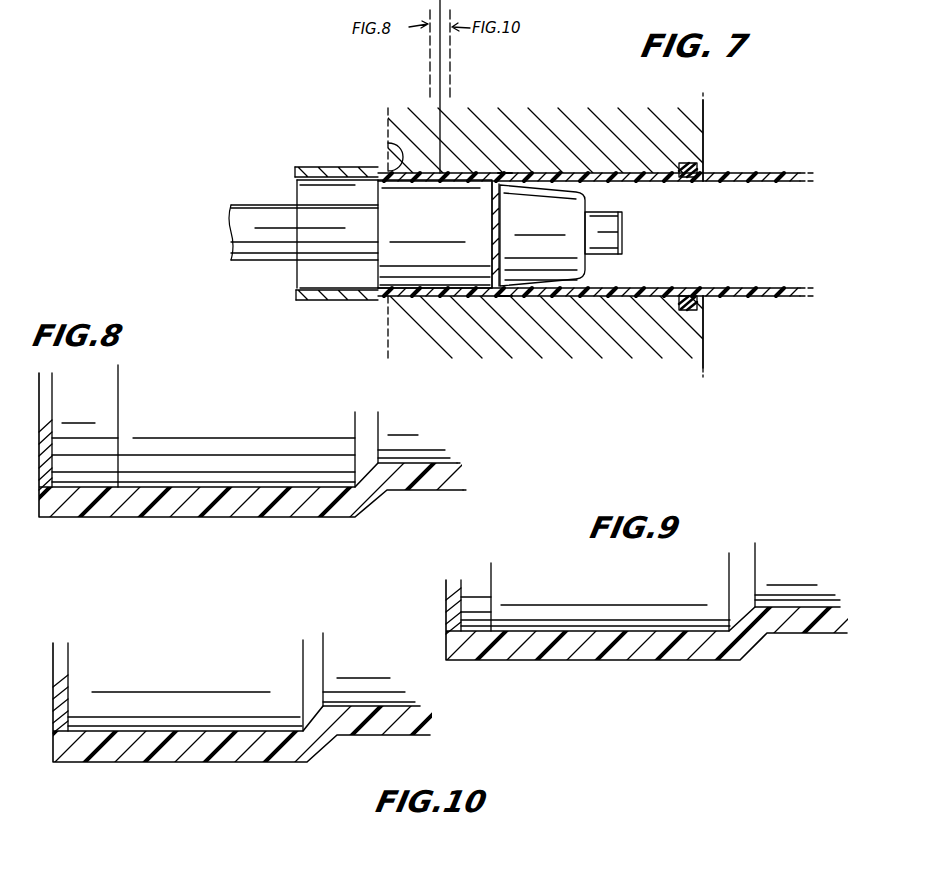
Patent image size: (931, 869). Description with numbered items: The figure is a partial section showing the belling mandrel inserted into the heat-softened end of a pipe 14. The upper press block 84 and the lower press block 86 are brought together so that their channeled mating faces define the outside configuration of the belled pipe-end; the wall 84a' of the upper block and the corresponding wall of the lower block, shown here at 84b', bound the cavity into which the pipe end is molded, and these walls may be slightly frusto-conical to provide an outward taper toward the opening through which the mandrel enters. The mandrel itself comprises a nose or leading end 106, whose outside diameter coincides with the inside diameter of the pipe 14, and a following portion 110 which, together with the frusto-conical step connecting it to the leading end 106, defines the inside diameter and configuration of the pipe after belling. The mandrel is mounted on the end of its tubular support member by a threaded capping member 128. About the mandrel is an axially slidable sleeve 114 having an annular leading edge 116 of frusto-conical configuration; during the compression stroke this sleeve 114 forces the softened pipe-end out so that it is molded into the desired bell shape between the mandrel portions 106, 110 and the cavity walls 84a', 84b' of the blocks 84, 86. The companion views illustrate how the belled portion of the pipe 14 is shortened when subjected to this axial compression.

In FIG. 7, the pipe 14 is at (770, 158).
In FIG. 8, the pipe 14 is at (430, 490).
In FIG. 9, the pipe 14 is at (797, 614).
In FIG. 10, the pipe 14 is at (357, 710).
In FIG. 7, the press block 84 is at (686, 118).
In FIG. 7, the wall defining second cavity portion 84a' is at (542, 126).
In FIG. 7, the lower bore surface of block 84b' is at (500, 343).
In FIG. 7, the press block 86 is at (683, 338).
In FIG. 7, the nose or leading end 106 is at (547, 230).
In FIG. 7, the following portion 110 is at (410, 268).
In FIG. 7, the axially slidable sleeve 114 is at (298, 302).
In FIG. 7, the annular leading edge 116 is at (390, 148).
In FIG. 7, the threaded capping member 128 is at (622, 226).